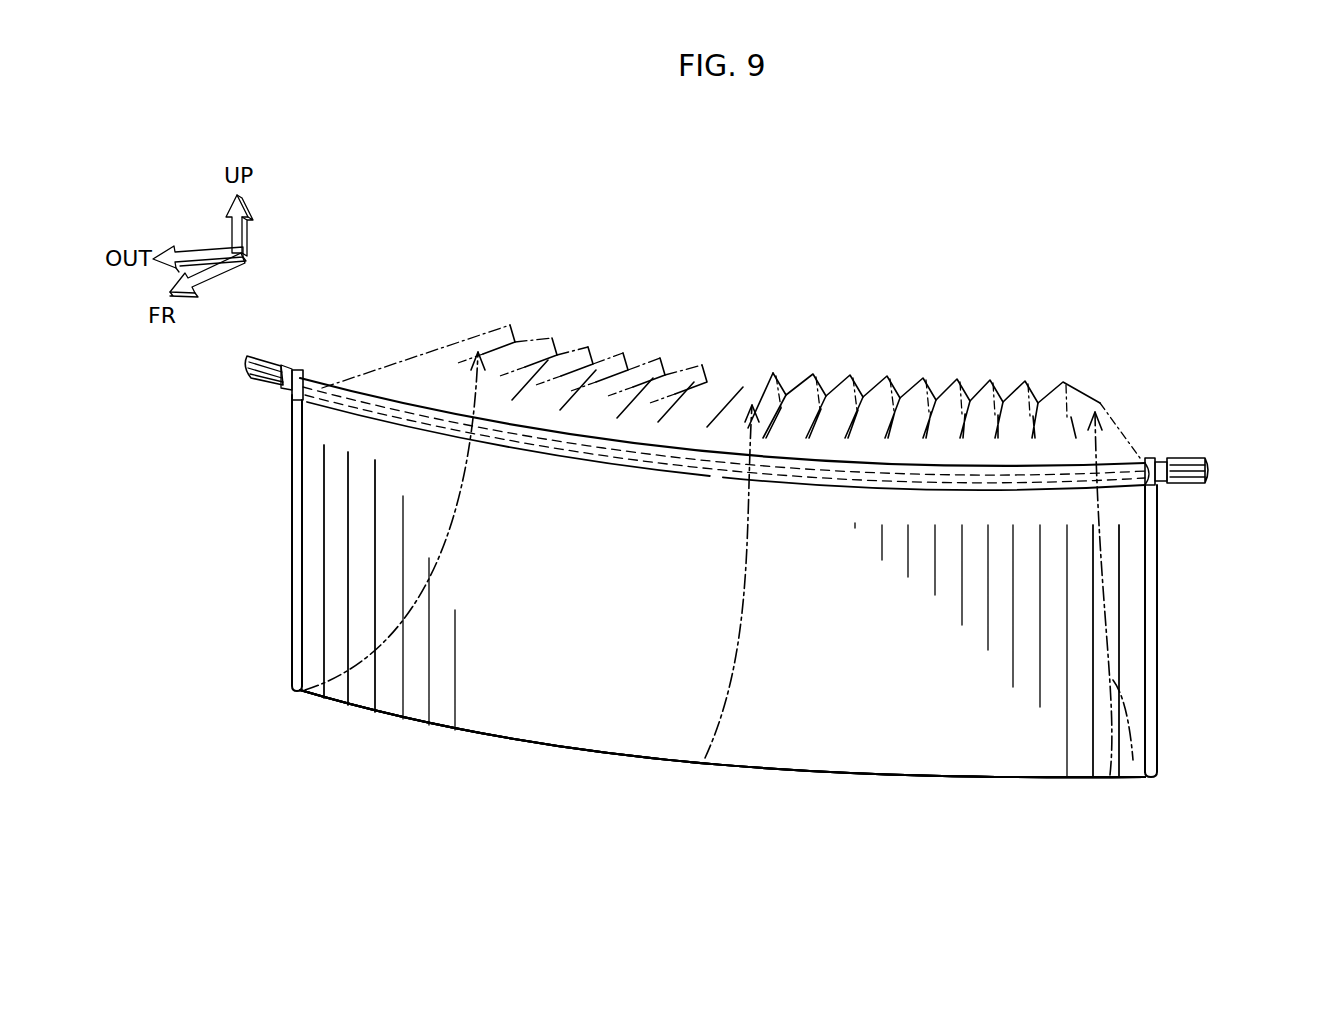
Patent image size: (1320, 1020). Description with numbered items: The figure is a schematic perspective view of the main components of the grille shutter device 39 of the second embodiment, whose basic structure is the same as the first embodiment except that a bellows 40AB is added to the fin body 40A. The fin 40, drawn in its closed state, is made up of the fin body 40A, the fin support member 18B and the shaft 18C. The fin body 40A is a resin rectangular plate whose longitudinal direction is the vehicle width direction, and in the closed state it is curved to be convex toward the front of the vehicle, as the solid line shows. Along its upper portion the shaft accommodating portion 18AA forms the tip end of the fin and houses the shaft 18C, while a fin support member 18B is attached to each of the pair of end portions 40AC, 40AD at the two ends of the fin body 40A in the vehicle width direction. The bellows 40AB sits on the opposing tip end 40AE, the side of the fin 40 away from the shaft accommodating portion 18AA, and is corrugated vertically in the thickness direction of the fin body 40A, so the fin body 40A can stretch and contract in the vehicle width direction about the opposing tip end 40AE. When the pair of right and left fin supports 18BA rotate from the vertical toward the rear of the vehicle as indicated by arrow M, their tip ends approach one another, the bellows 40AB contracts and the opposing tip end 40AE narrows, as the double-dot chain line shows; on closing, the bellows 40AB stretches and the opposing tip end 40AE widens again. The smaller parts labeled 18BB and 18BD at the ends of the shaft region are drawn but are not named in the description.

The grille shutter device 39 is at (230, 555).
The fin 40 is at (392, 720).
The fin body 40A is at (517, 725).
The bellows 40AB is at (1103, 382).
The end portion 40AC is at (312, 606).
The end portion 40AD is at (1140, 665).
The opposing tip end 40AE is at (648, 750).
The fin support member 18B is at (290, 524).
The fin support 18BA is at (297, 568).
The support collar 18BB is at (300, 372).
The knob 18BD is at (268, 372).
The shaft accommodating portion 18AA is at (518, 458).
The shaft 18C is at (595, 462).
The arrow M is at (455, 590).